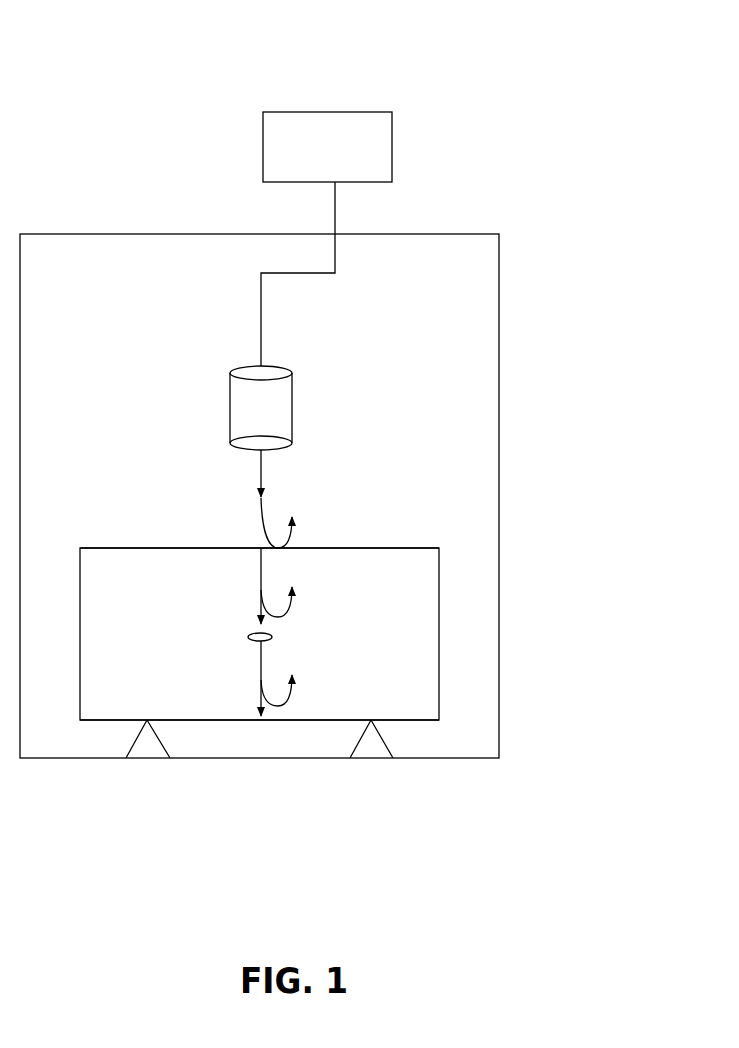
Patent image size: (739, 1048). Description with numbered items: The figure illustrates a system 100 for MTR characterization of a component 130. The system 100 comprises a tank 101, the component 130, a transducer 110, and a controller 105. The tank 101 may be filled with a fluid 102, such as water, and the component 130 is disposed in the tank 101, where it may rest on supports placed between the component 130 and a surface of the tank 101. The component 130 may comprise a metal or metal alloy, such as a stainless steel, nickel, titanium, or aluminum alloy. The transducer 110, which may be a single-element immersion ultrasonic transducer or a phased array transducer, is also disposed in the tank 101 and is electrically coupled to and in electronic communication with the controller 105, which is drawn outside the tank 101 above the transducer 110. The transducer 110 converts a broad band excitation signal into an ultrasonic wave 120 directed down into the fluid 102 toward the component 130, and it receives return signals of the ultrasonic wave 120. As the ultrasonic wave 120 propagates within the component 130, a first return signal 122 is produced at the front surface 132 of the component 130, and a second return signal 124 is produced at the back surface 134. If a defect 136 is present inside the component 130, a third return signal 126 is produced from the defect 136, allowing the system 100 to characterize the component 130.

The system 100 is at (181, 82).
The tank 101 is at (499, 307).
The fluid 102 is at (259, 496).
The controller 105 is at (326, 239).
The transducer 110 is at (261, 408).
The ultrasonic wave 120 is at (262, 478).
The first return signal 122 is at (262, 544).
The second return signal 124 is at (282, 706).
The third return signal 126 is at (282, 617).
The component 130 is at (259, 634).
The front surface 132 is at (357, 548).
The back surface 134 is at (194, 720).
The defect 136 is at (272, 637).